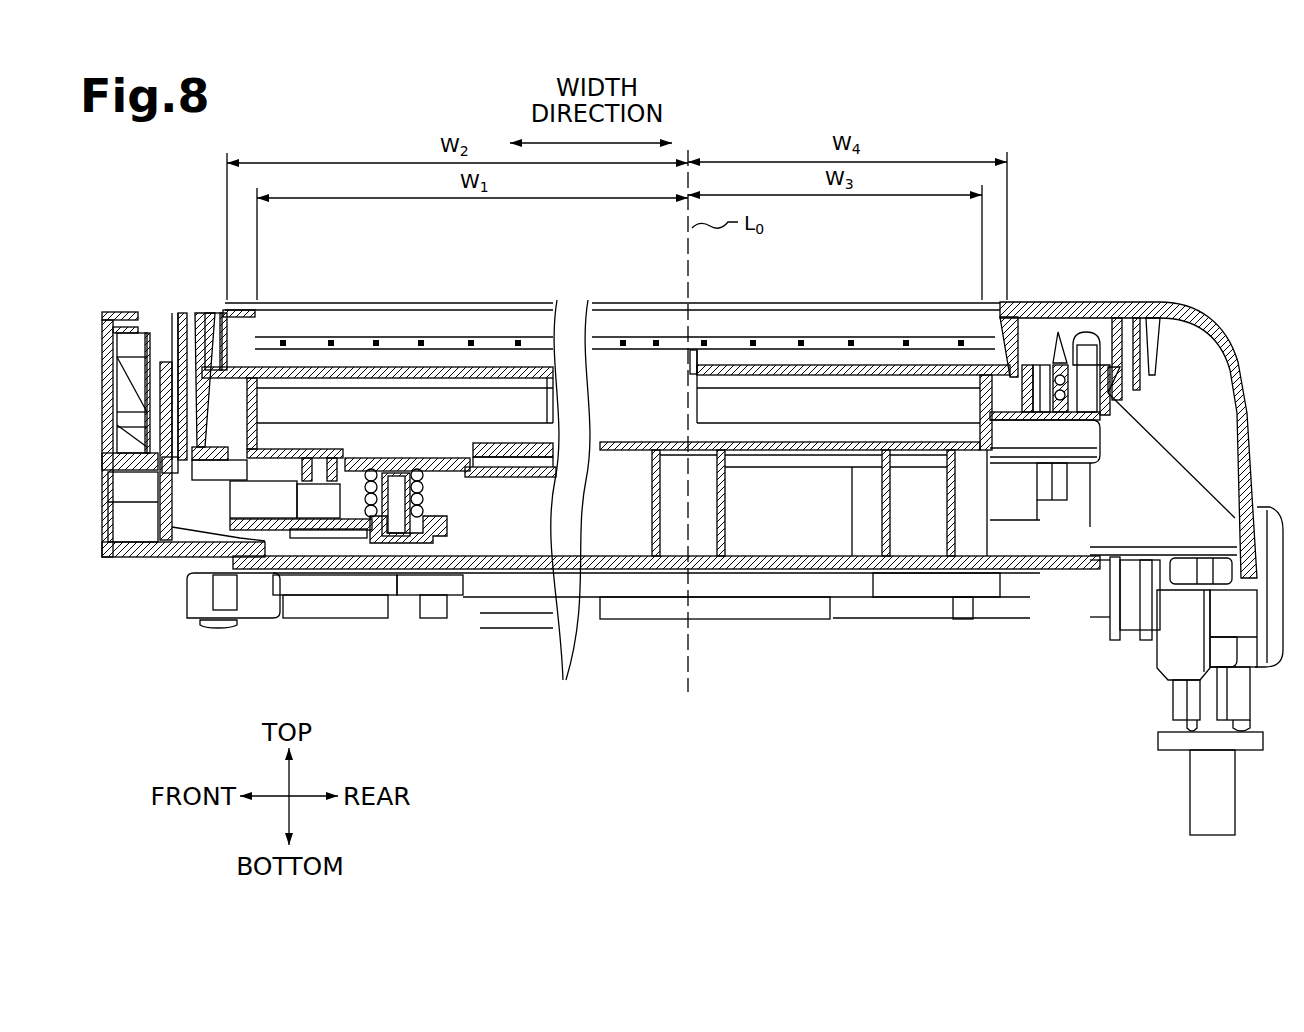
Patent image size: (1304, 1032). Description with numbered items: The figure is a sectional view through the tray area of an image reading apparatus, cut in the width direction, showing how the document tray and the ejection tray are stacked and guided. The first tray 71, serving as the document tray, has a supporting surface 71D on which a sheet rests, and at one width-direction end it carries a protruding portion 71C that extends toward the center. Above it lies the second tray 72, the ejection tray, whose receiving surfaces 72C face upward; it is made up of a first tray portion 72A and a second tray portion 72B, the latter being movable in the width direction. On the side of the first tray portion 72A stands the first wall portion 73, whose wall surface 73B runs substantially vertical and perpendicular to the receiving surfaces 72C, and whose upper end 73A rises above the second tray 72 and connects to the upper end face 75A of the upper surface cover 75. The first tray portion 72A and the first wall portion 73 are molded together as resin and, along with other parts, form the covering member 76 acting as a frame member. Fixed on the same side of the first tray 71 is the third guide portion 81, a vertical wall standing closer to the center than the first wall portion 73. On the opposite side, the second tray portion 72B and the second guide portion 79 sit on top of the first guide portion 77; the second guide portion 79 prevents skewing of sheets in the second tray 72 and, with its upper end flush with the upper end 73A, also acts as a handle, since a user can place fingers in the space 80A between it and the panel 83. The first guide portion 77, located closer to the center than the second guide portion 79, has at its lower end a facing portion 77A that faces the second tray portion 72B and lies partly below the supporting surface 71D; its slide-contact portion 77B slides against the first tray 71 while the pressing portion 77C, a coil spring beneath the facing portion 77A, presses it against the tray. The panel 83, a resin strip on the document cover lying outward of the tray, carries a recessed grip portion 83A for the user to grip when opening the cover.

The first tray 71 is at (790, 432).
The protruding portion 71C is at (187, 307).
The supporting surface 71D is at (766, 576).
The second tray 72 is at (606, 318).
The first tray portion 72A is at (776, 362).
The second tray portion 72B is at (400, 365).
The receiving surfaces 72C is at (455, 362).
The first wall portion 73 is at (1073, 372).
The upper end 73A is at (1008, 302).
The wall surface 73B is at (987, 300).
The upper surface cover 75 is at (1144, 536).
The upper end face 75A is at (1087, 300).
The covering member 76 is at (1222, 326).
The first guide portion 77 is at (268, 400).
The facing portion 77A is at (340, 470).
The slide-contact portion 77B is at (455, 478).
The pressing portion 77C is at (363, 478).
The second guide portion 79 is at (243, 330).
The space 80A is at (200, 312).
The third guide portion 81 is at (978, 398).
The panel 83 is at (97, 445).
The grip portion 83A is at (133, 517).